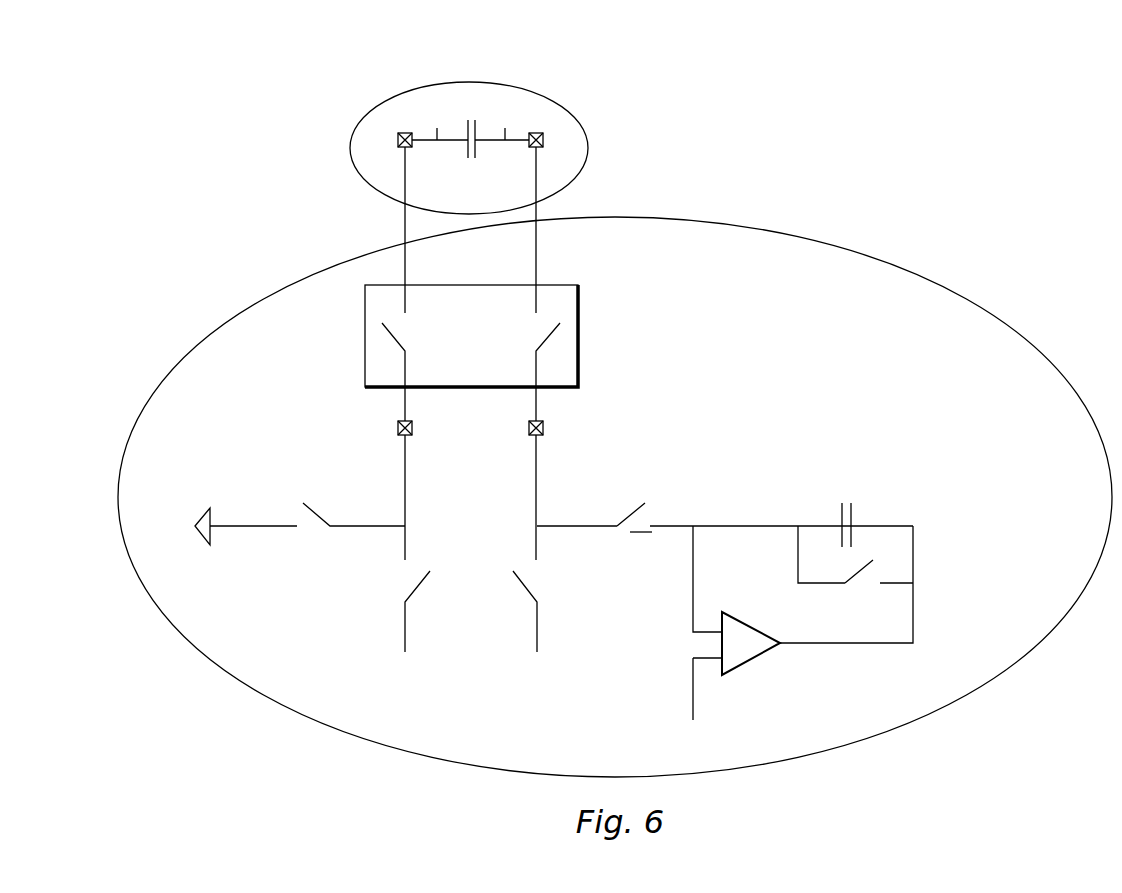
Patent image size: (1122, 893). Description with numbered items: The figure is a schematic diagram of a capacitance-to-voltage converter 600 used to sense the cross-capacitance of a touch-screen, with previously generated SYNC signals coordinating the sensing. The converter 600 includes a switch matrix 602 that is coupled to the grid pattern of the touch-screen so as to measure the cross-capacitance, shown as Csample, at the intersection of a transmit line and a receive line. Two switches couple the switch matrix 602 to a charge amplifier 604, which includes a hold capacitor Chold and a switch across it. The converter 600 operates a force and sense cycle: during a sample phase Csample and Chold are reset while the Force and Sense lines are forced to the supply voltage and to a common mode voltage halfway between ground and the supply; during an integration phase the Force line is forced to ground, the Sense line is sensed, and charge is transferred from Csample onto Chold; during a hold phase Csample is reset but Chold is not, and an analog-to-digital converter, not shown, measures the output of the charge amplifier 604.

The capacitance-to-voltage converter 600 is at (210, 97).
The switch matrix 602 is at (580, 300).
The charge amplifier 604 is at (745, 663).